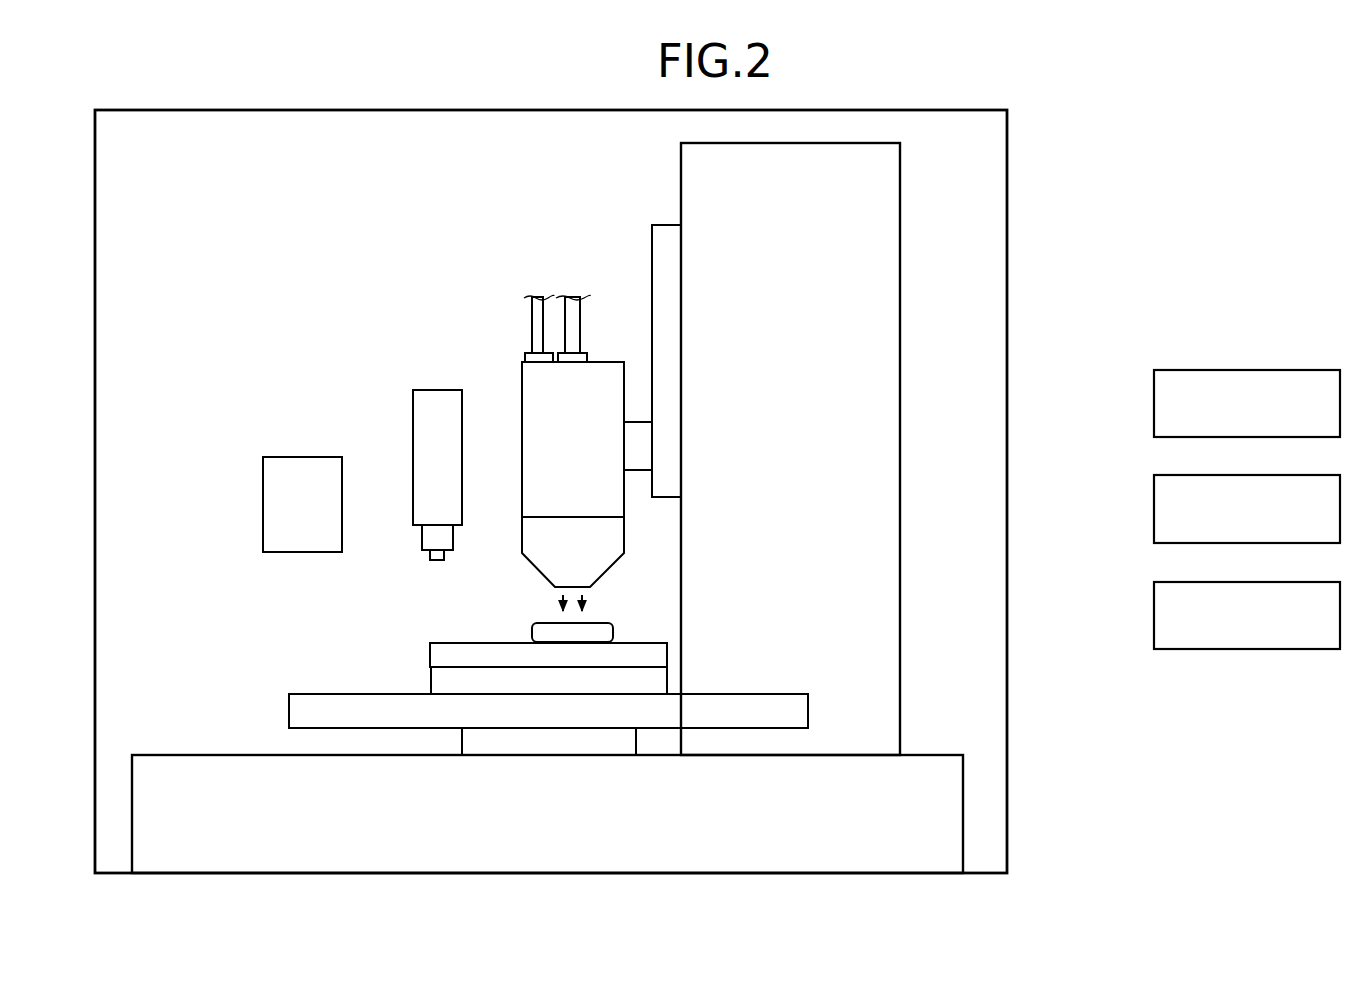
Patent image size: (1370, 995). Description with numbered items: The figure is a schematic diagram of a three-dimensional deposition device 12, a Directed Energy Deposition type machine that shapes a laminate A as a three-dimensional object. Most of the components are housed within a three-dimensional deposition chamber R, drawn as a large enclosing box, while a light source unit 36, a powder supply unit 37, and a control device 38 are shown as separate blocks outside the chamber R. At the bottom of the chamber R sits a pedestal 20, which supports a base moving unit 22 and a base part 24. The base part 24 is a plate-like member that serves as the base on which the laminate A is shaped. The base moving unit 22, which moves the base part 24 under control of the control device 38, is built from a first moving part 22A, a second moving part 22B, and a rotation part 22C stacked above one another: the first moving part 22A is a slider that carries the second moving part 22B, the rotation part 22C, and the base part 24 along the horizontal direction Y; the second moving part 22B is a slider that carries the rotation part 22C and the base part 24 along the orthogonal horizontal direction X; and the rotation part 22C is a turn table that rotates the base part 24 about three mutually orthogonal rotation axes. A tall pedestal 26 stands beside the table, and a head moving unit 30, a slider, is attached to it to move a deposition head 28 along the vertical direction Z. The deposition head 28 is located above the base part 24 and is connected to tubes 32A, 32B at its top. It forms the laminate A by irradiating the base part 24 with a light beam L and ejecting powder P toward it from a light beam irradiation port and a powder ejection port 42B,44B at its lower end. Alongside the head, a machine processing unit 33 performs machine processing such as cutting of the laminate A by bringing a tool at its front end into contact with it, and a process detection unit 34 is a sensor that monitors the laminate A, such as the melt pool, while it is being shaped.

The three-dimensional deposition device 12 is at (1038, 95).
The three-dimensional deposition chamber R is at (932, 110).
The pedestal 20 is at (614, 860).
The base moving unit 22 is at (560, 907).
The first moving part 22A is at (542, 743).
The second moving part 22B is at (495, 714).
The rotation part 22C is at (465, 682).
The base part 24 is at (451, 658).
The pedestal 26 is at (913, 656).
The deposition head 28 is at (499, 548).
The head moving unit 30 is at (687, 452).
The tube 32A is at (577, 282).
The tube 32B is at (512, 315).
The machine processing unit 33 is at (429, 371).
The process detection unit 34 is at (297, 438).
The light source unit 36 is at (1303, 370).
The powder supply unit 37 is at (1303, 475).
The control device 38 is at (1304, 566).
The light beam irradiation port and powder ejection port 42B,44B is at (580, 588).
The laminate A is at (511, 629).
The light beam L is at (557, 604).
The powder P is at (588, 598).